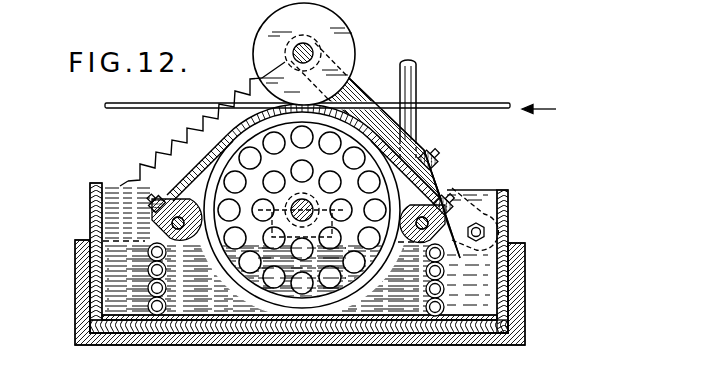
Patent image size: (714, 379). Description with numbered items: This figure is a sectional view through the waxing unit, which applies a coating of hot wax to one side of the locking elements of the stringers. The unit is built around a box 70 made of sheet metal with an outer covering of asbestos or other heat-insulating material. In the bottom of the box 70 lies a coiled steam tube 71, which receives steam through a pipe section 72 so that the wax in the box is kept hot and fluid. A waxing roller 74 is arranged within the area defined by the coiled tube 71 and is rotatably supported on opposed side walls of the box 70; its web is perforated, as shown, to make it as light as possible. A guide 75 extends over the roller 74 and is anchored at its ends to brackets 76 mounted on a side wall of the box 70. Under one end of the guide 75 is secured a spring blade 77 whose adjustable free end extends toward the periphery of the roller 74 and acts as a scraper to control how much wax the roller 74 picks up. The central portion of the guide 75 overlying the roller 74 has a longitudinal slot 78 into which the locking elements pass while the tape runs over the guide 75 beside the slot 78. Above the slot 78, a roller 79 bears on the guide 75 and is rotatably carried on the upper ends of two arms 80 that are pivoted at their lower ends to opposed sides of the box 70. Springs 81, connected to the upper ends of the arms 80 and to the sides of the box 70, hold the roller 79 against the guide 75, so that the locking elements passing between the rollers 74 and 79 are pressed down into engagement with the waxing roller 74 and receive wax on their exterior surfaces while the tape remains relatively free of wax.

The box 70 is at (525, 281).
The coiled steam tube 71 is at (445, 289).
The pipe section 72 is at (418, 77).
The waxing roller 74 is at (326, 294).
The guide 75 is at (357, 127).
The brackets 76 is at (160, 223).
The spring blade 77 is at (436, 178).
The slot 78 is at (336, 105).
The roller 79 is at (263, 24).
The arms 80 is at (413, 144).
The springs 81 is at (164, 149).